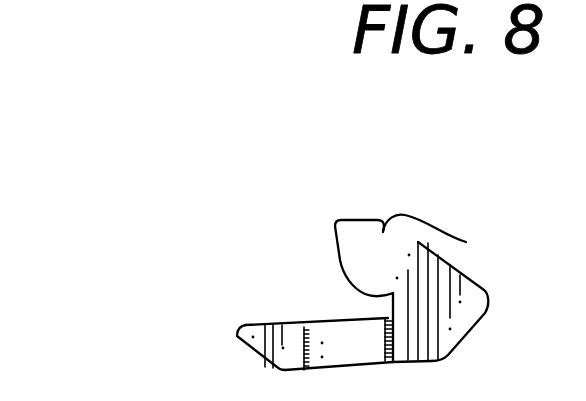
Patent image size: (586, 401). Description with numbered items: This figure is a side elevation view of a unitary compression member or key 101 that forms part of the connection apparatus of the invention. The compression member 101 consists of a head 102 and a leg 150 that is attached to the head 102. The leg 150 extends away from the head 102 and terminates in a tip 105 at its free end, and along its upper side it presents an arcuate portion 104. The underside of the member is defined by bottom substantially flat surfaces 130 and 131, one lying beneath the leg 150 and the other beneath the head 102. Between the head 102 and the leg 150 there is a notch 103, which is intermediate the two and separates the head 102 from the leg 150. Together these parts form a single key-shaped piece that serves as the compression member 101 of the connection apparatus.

The compression member 101 is at (319, 209).
The head 102 is at (464, 242).
The notch 103 is at (390, 298).
The arcuate portion 104 is at (347, 333).
The tip 105 is at (238, 334).
The bottom substantially flat surface 130 is at (431, 362).
The bottom substantially flat surface 131 is at (297, 372).
The leg 150 is at (204, 325).